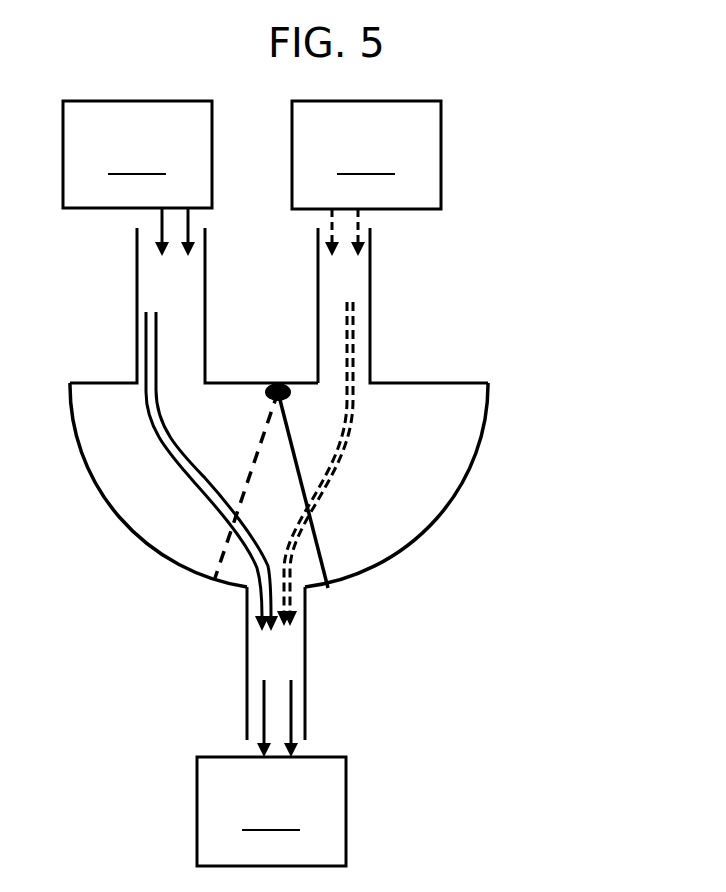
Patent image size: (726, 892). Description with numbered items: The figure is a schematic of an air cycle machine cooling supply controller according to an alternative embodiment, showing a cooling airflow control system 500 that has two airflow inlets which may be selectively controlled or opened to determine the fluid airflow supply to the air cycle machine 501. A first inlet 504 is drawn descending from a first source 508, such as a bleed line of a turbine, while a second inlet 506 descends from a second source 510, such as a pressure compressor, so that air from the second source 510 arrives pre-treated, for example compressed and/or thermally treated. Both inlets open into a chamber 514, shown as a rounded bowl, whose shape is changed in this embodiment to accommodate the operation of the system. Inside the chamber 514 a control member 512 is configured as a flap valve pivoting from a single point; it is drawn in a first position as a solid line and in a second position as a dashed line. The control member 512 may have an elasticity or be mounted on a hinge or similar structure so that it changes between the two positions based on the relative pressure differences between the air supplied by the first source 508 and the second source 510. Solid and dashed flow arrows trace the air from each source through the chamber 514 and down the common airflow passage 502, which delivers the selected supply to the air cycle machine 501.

The cooling airflow control system 500 is at (640, 162).
The air cycle machine 501 is at (271, 811).
The airflow passage 502 is at (306, 681).
The first inlet 504 is at (136, 346).
The second inlet 506 is at (370, 332).
The first source 508 is at (137, 154).
The second source 510 is at (366, 155).
The control member 512 is at (320, 559).
The chamber 514 is at (466, 472).